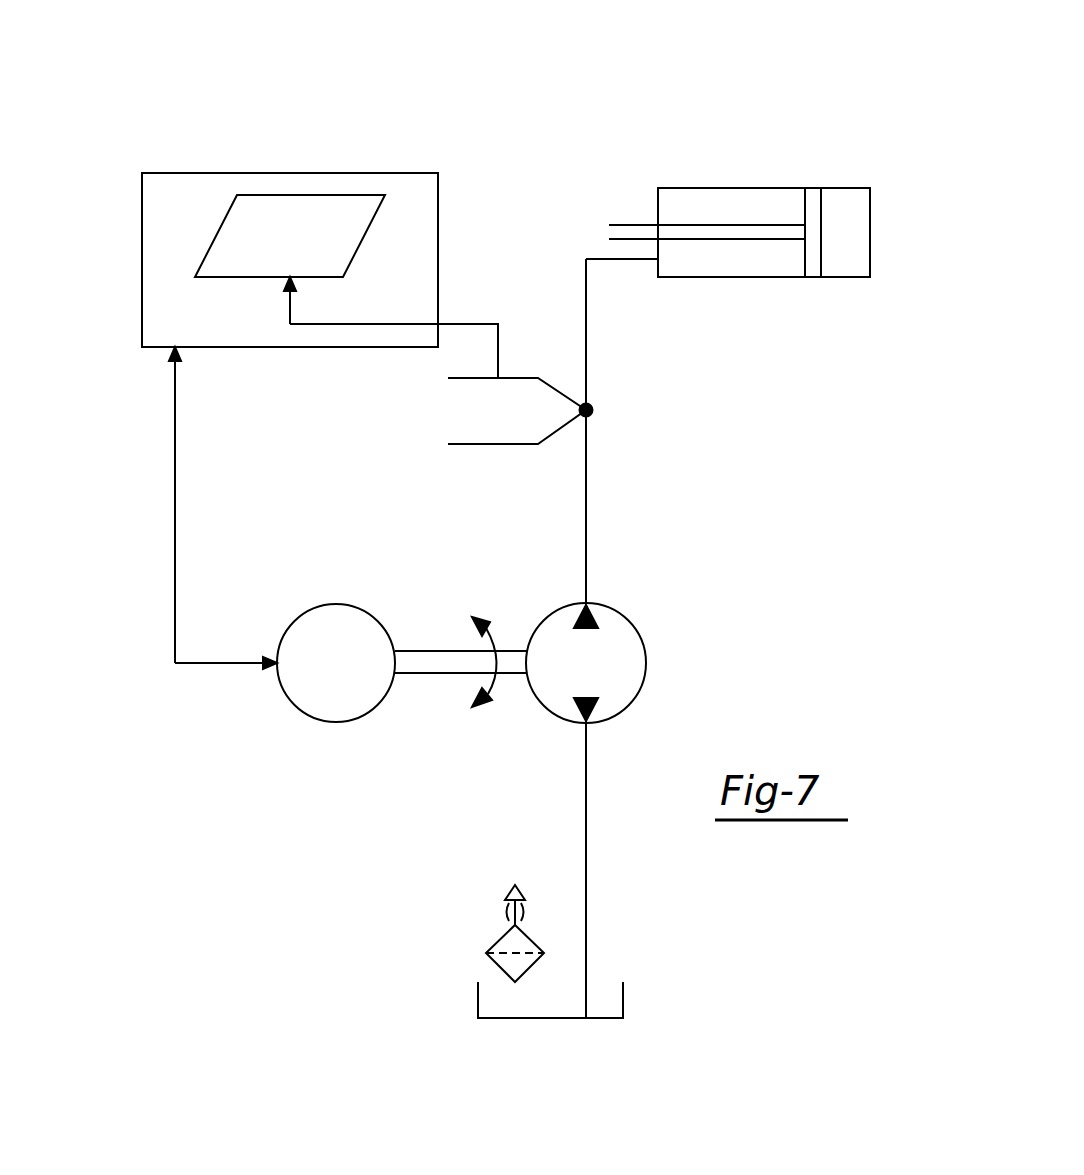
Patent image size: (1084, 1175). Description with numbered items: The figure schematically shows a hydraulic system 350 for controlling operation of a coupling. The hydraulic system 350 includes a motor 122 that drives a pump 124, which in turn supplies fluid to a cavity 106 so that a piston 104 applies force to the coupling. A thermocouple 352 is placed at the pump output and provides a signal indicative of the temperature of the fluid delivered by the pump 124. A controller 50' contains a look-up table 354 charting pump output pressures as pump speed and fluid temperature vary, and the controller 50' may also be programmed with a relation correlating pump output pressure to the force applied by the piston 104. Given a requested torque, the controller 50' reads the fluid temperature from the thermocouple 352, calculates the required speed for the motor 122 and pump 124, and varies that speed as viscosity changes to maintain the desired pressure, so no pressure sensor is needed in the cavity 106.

The controller 50' is at (249, 260).
The look-up table 354 is at (343, 232).
The thermocouple 352 is at (592, 410).
The cavity 106 is at (720, 190).
The piston 104 is at (817, 248).
The hydraulic system 350 is at (800, 98).
The motor 122 is at (322, 625).
The pump 124 is at (627, 670).